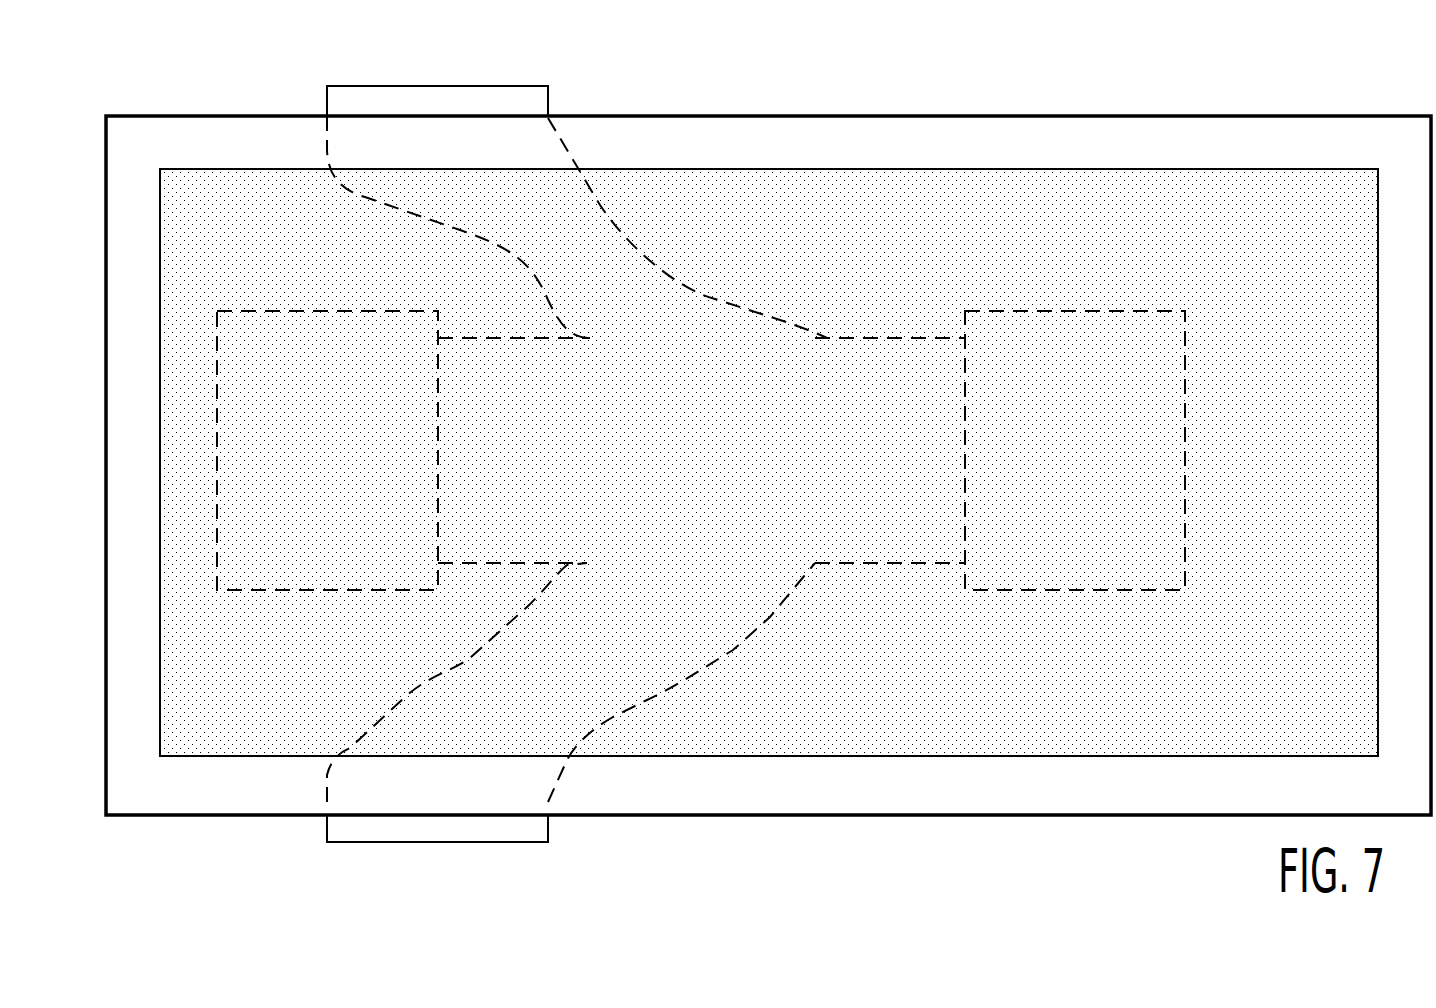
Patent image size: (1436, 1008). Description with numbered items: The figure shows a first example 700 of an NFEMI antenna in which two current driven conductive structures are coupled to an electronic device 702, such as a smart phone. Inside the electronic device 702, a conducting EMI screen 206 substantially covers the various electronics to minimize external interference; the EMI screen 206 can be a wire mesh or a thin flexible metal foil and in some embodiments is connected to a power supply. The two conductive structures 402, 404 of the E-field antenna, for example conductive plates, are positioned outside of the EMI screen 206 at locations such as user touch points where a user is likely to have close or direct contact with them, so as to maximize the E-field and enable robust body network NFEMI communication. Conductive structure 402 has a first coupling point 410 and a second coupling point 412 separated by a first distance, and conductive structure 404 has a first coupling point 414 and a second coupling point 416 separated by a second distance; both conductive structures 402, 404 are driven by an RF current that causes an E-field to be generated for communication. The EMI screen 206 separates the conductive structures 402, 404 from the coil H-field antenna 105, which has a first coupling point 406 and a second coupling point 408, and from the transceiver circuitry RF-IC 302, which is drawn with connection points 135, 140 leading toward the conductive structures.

The first example 700 is at (158, 77).
The electronic device 702 is at (1000, 114).
The conducting EMI screen 206 is at (1378, 203).
The conductive structure 402 is at (445, 95).
The conductive structure 404 is at (508, 830).
The transceiver circuitry (RF-IC) 302 is at (312, 484).
The H-field antenna 105 is at (1058, 482).
The first RF-IC terminal 135 is at (500, 339).
The second RF-IC terminal 140 is at (500, 562).
The first coupling point 406 is at (873, 337).
The second coupling point 408 is at (877, 564).
The first coupling point 410 is at (347, 198).
The second coupling point 412 is at (718, 298).
The first coupling point 414 is at (385, 700).
The second coupling point 416 is at (770, 617).